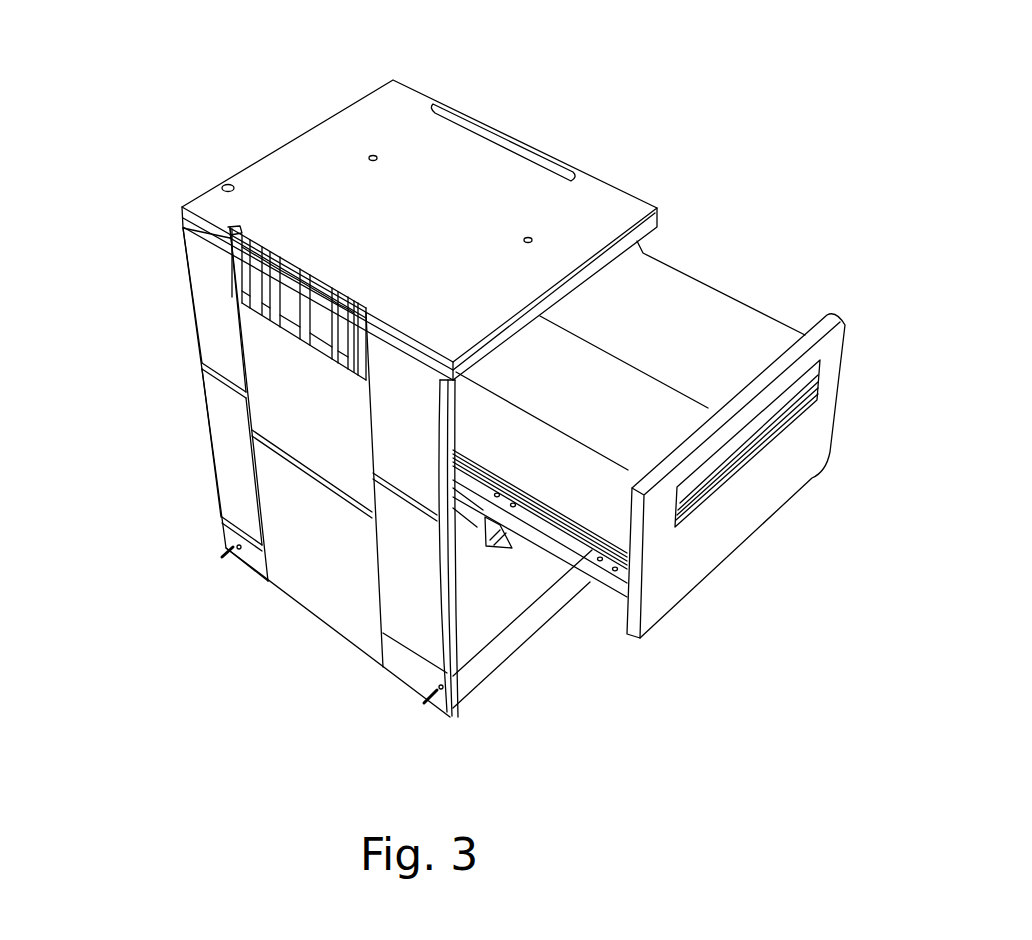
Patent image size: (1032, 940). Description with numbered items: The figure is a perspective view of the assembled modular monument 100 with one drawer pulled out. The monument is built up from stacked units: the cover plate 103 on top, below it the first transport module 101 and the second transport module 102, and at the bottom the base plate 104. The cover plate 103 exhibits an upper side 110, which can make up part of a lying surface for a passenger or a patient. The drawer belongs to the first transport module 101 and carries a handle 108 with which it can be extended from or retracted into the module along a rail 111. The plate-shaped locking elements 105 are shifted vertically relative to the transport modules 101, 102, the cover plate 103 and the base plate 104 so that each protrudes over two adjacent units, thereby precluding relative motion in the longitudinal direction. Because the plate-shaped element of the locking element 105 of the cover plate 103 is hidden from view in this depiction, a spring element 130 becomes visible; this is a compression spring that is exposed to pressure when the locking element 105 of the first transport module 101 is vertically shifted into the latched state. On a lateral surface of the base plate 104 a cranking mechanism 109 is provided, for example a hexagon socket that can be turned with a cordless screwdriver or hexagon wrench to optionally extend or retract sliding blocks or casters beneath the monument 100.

The modular monument 100 is at (226, 88).
The upper side 110 is at (461, 156).
The cover plate 103 is at (172, 210).
The first transport module 101 is at (187, 303).
The second transport module 102 is at (197, 443).
The base plate 104 is at (208, 530).
The cranking mechanism 109 is at (224, 550).
The locking element 105 is at (308, 304).
The spring element 130 is at (300, 305).
The handle 108 is at (740, 444).
The rail 111 is at (590, 560).